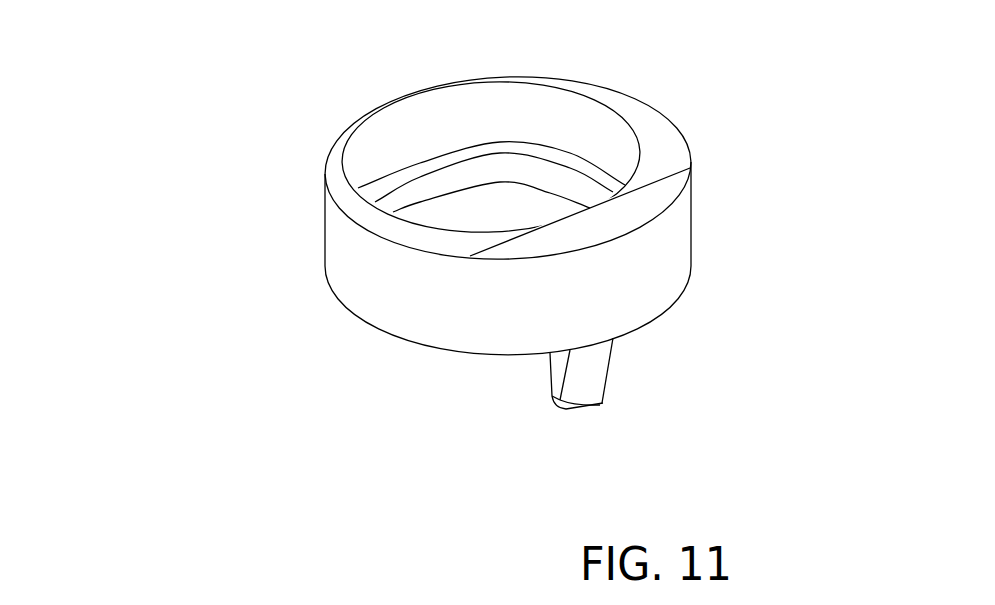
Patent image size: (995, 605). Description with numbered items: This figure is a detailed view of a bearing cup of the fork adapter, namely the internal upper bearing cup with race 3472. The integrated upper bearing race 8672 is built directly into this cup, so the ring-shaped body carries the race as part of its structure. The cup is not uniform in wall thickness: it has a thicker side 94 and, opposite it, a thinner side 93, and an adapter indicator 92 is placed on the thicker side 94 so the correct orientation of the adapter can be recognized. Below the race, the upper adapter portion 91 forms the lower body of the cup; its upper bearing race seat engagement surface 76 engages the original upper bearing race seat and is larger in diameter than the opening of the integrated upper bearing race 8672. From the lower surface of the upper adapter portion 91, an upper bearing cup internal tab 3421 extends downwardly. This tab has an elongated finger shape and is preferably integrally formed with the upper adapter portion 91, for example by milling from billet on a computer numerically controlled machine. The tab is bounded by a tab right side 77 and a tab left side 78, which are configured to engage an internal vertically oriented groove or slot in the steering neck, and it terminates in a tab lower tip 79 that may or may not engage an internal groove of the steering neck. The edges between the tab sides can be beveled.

The thinner side 93 is at (415, 92).
The integrated upper bearing race 8672 is at (572, 112).
The thicker side 94 is at (536, 247).
The adapter indicator 92 is at (663, 192).
The internal upper bearing cup with race 3472 is at (340, 240).
The upper bearing race seat engagement surface 76 is at (370, 280).
The upper adapter portion 91 is at (415, 317).
The tab right side 77 is at (557, 370).
The tab left side 78 is at (610, 356).
The tab lower tip 79 is at (590, 413).
The upper bearing cup internal tab 3421 is at (612, 368).